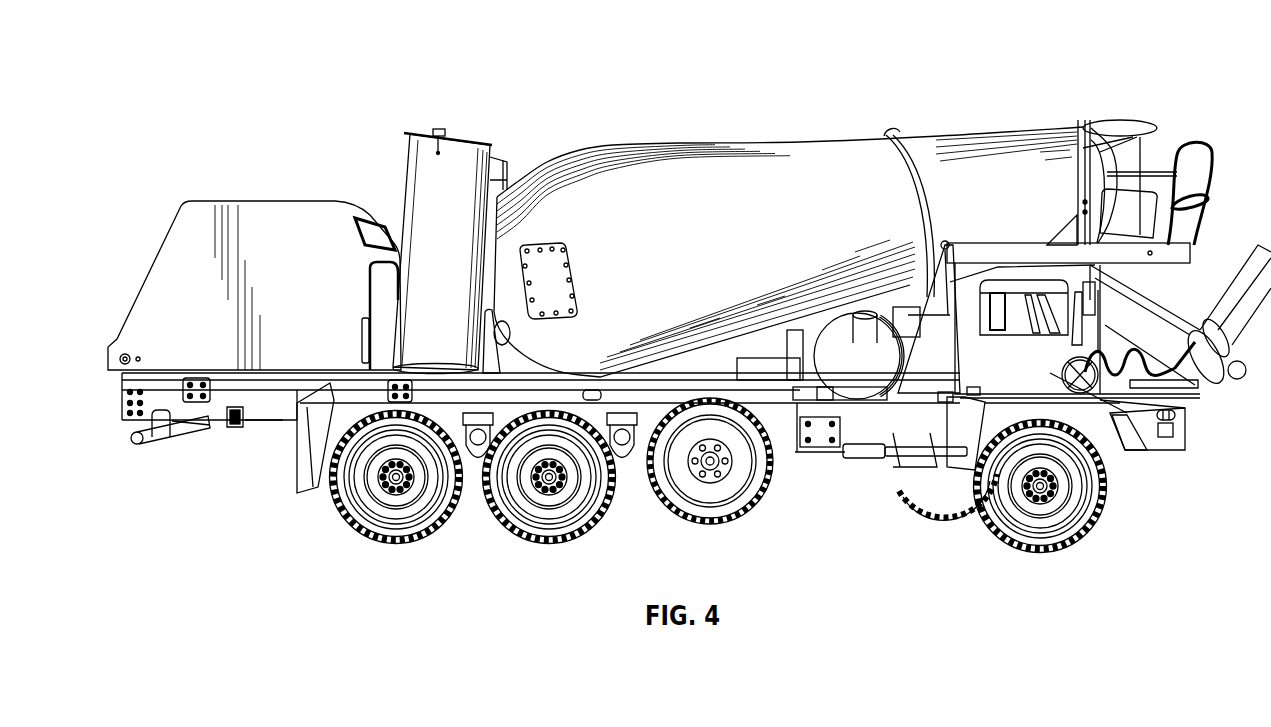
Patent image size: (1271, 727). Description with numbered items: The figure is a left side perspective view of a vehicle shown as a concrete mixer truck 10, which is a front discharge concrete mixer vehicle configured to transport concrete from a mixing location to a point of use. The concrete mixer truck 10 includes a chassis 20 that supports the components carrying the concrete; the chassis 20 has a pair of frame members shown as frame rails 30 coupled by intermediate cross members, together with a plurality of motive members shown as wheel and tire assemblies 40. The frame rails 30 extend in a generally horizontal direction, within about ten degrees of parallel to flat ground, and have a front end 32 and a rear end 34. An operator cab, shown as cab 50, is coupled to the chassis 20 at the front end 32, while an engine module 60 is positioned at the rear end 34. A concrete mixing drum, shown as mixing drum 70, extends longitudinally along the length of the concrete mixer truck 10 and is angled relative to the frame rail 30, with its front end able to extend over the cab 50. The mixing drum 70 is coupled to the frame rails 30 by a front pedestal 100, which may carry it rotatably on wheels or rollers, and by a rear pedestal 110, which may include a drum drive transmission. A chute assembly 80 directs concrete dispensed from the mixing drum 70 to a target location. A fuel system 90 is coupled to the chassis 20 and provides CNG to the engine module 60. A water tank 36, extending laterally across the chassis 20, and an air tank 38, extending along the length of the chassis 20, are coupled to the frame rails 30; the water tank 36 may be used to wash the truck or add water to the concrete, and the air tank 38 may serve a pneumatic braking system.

The concrete mixer truck 10 is at (1152, 74).
The chassis 20 is at (828, 470).
The frame rail 30 is at (789, 405).
The front end 32 is at (1113, 450).
The rear end 34 is at (124, 436).
The water tank 36 is at (895, 455).
The air tank 38 is at (757, 368).
The wheel and tire assemblies 40 is at (348, 518).
The cab 50 is at (1185, 440).
The engine module 60 is at (276, 214).
The mixing drum 70 is at (682, 168).
The chute assembly 80 is at (1205, 303).
The fuel system 90 is at (484, 116).
The front pedestal 100 is at (948, 357).
The rear pedestal 110 is at (500, 323).